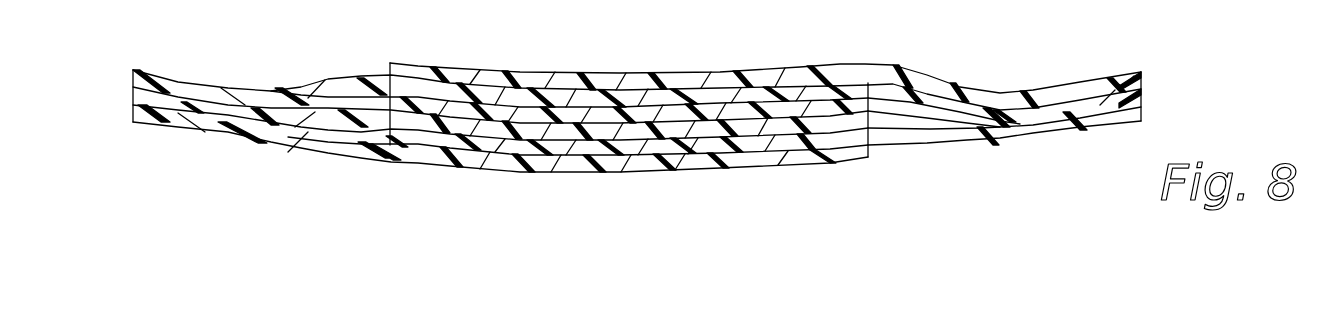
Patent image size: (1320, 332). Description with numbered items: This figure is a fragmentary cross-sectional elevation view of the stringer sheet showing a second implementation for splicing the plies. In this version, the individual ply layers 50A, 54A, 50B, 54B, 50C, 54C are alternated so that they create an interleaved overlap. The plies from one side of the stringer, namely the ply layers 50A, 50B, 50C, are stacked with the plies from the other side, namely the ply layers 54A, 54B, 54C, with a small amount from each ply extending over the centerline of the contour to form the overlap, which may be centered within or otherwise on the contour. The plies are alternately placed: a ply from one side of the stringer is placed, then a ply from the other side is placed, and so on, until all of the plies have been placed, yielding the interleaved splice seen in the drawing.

The ply layer 50A is at (365, 147).
The ply layer 50B is at (338, 115).
The ply layer 50C is at (308, 95).
The ply layer 54A is at (933, 133).
The ply layer 54B is at (927, 110).
The ply layer 54C is at (893, 63).